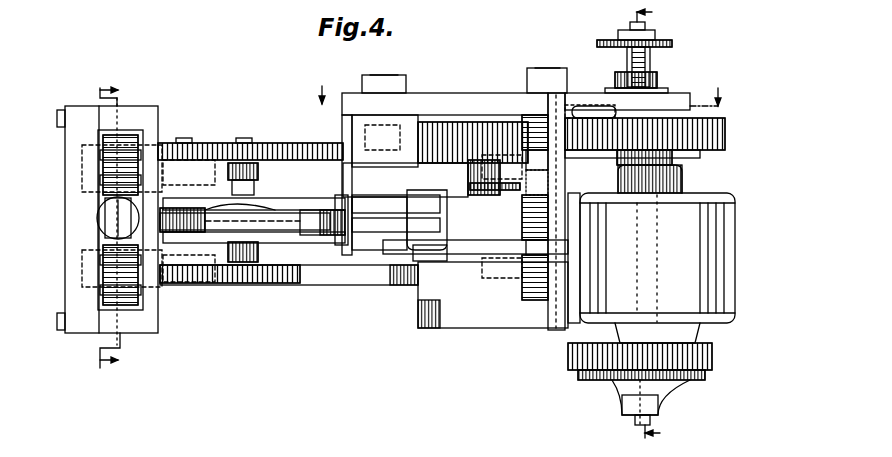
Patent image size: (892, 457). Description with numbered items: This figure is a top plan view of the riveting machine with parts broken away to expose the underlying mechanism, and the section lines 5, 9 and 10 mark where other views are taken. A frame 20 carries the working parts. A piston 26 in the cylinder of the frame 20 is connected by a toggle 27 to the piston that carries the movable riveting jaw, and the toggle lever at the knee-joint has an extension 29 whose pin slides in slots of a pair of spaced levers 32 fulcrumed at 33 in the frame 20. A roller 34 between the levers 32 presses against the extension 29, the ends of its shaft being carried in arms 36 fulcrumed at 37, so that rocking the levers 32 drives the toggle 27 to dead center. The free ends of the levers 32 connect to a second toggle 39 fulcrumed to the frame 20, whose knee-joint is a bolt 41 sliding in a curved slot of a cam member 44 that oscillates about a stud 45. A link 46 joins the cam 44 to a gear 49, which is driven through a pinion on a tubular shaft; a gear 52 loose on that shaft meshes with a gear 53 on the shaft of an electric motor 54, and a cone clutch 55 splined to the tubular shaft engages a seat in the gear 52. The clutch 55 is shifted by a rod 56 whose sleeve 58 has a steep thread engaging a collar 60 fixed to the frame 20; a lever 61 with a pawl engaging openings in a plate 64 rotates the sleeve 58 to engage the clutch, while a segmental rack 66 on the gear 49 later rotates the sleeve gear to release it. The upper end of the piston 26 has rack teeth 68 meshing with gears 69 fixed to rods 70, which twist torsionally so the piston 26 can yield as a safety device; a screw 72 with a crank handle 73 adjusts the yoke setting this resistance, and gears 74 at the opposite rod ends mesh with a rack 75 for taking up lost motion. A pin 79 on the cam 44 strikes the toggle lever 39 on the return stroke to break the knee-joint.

The section line 5- 5 is at (118, 225).
The section line 9- 9 is at (516, 101).
The section line 10- 10 is at (642, 227).
The frame 20 is at (330, 282).
The piston 26 is at (110, 222).
The toggle 27 is at (245, 220).
The extension 29 is at (318, 220).
The levers 32 is at (305, 200).
The fulcrum 33 is at (250, 140).
The roller 34 is at (228, 206).
The arms 36 is at (252, 190).
The fulcrum 37 is at (247, 131).
The toggle 39 is at (372, 228).
The bolt 41 is at (428, 272).
The cam member 44 is at (445, 177).
The stud 45 is at (398, 79).
The link 46 is at (680, 158).
The gear 49 is at (727, 136).
The gear 52 is at (710, 372).
The gear 53 is at (680, 360).
The electric motor 54 is at (716, 258).
The cone clutch 55 is at (690, 382).
The rod 56 is at (648, 26).
The sleeve 58 is at (630, 78).
The collar 60 is at (656, 80).
The lever 61 is at (656, 45).
The plate 64 is at (672, 43).
The segmental rack 66 is at (612, 118).
The rack teeth 68 is at (105, 210).
The gears 69 is at (133, 143).
The rods 70 is at (193, 168).
The screw 72 is at (182, 285).
The crank handle 73 is at (545, 195).
The gears 74 is at (538, 112).
The rack 75 is at (561, 182).
The pin 79 is at (355, 207).